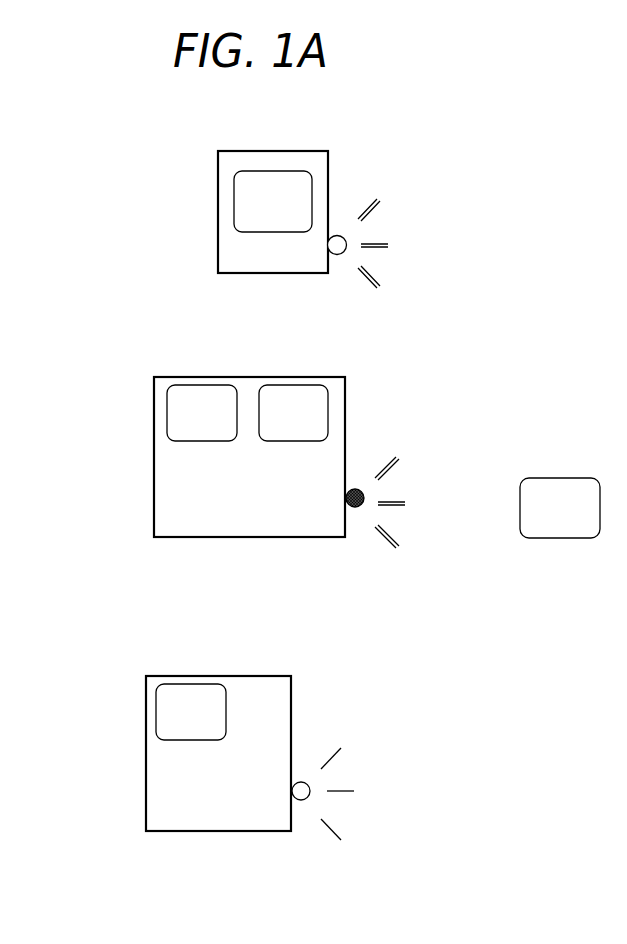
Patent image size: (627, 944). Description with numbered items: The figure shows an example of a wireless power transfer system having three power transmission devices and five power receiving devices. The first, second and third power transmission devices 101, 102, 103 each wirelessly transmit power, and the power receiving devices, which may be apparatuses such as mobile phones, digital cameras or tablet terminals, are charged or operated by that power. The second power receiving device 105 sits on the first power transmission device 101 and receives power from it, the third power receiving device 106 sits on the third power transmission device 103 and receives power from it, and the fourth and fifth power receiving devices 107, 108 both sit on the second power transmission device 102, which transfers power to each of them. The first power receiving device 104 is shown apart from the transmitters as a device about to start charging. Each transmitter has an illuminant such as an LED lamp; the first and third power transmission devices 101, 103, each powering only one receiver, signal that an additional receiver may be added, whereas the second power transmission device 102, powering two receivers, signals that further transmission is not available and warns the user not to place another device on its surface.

The power transmission device TX1 101 is at (329, 160).
The power transmission device TX2 102 is at (346, 402).
The power transmission device TX3 103 is at (292, 699).
The power receiving device RX1 104 is at (563, 486).
The power receiving device RX2 105 is at (233, 178).
The power receiving device RX3 106 is at (189, 691).
The power receiving device RX4 107 is at (189, 391).
The power receiving device RX5 108 is at (284, 391).